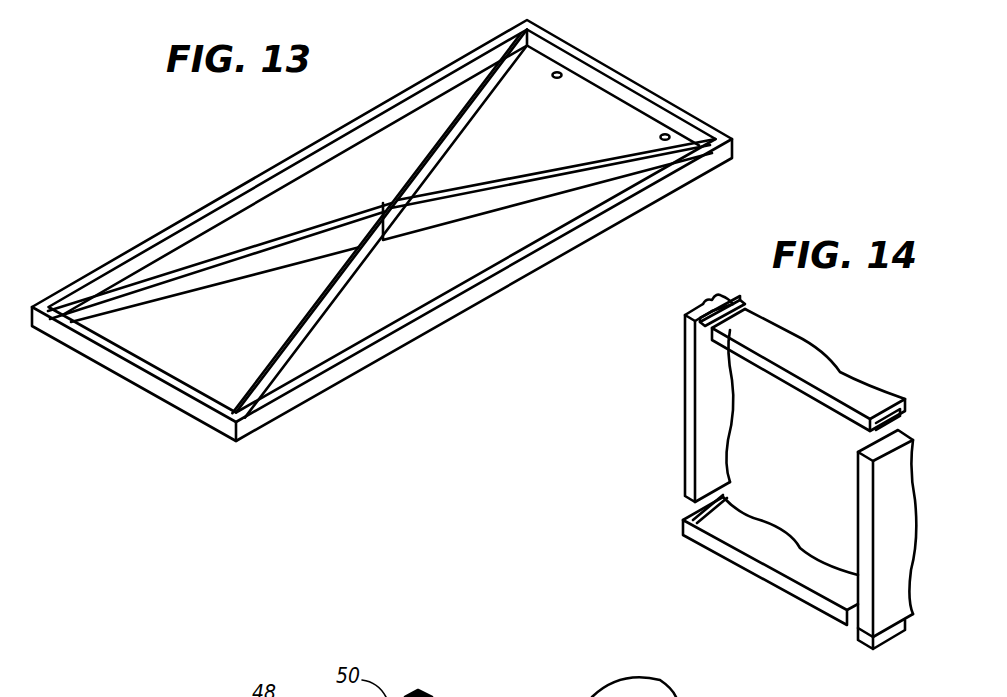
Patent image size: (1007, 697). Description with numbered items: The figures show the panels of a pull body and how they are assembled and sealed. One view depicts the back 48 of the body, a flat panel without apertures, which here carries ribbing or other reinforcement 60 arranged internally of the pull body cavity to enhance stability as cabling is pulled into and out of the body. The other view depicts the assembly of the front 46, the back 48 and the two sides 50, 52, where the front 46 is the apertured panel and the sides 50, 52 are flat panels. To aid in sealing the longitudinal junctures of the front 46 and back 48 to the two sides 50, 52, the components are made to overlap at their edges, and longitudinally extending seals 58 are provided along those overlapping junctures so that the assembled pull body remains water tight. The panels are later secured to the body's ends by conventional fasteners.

In FIG. 13, the front 46 is at (132, 384).
In FIG. 14, the front 46 is at (745, 572).
In FIG. 14, the back 48 is at (848, 376).
In FIG. 14, the side 50 is at (684, 357).
In FIG. 14, the side 52 is at (905, 630).
In FIG. 14, the longitudinally extending seal 58 is at (712, 305).
In FIG. 13, the ribbing or other reinforcement 60 is at (221, 293).